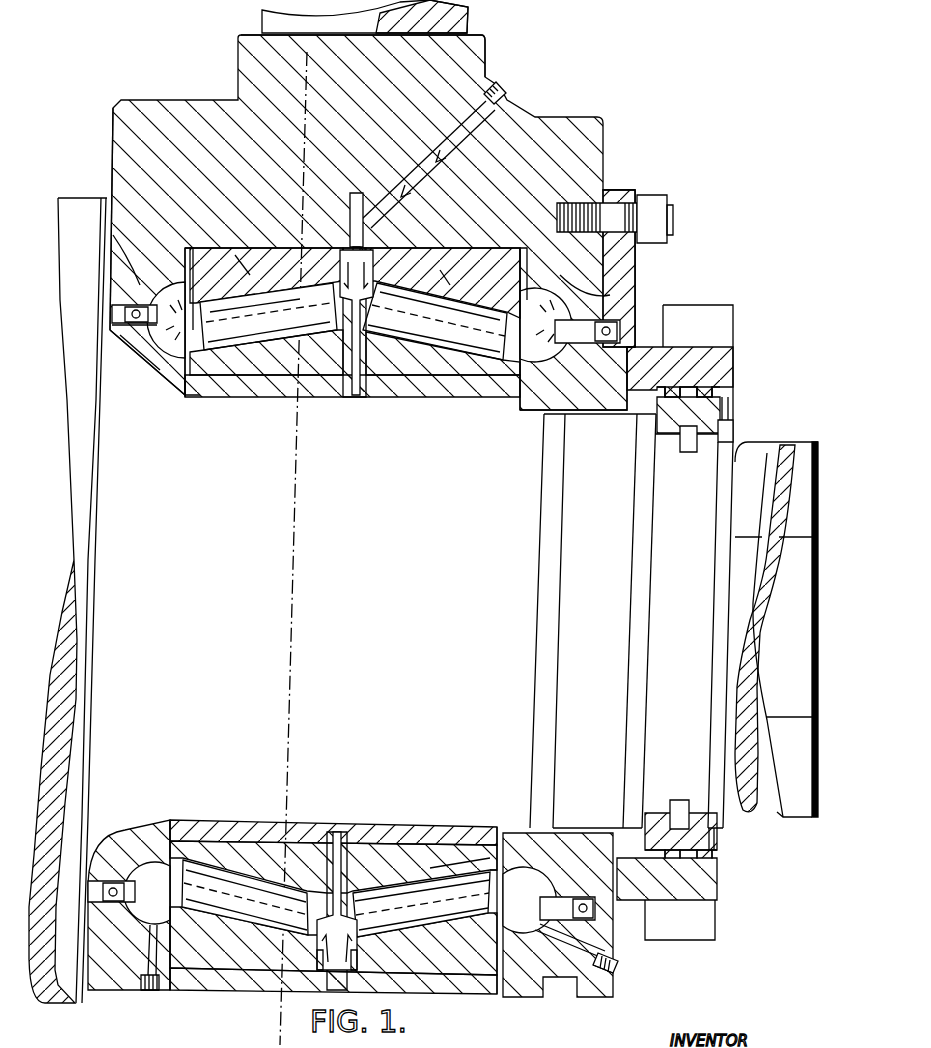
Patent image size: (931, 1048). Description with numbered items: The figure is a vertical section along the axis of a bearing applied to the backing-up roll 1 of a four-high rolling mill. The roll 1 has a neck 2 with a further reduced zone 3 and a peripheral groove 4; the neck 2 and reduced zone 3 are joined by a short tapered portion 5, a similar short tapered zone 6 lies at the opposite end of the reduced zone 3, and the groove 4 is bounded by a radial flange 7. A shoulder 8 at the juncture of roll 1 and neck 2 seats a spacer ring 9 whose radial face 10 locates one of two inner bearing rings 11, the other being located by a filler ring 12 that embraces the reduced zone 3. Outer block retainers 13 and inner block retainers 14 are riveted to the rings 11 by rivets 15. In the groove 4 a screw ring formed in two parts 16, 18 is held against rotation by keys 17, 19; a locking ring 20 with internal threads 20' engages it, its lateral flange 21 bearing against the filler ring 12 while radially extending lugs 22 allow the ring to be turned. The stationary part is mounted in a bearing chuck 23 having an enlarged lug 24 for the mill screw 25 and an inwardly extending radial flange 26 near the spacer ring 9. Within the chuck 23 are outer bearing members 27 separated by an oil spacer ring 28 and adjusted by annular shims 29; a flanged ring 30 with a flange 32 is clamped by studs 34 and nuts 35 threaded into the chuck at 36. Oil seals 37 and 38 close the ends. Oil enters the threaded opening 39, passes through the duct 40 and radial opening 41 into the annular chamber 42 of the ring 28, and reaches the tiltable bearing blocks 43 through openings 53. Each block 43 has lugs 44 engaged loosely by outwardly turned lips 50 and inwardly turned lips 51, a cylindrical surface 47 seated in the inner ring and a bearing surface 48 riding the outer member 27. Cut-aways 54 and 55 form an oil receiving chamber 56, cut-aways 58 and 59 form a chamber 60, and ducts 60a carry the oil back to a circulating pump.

The roll 1 is at (68, 600).
The neck 2 is at (312, 60).
The reduced zone 3 is at (611, 621).
The peripheral groove 4 is at (687, 509).
The short tapered portion 5 is at (550, 610).
The short tapered zone 6 is at (640, 617).
The radial flange 7 is at (717, 613).
The shoulder 8 is at (100, 527).
The spacer ring 9 is at (153, 367).
The radial face 10 is at (178, 392).
The inner bearing rings 11 is at (280, 392).
The filler ring 12 is at (537, 412).
The outer block retainers 13 is at (192, 392).
The inner block retainers 14 is at (352, 400).
The rivets 15 is at (320, 373).
The screw ring section 16 is at (734, 416).
The key 17 is at (698, 440).
The screw ring section 18 is at (700, 850).
The key 19 is at (690, 828).
The locking ring 20 is at (701, 646).
The internal threads 20' is at (720, 387).
The lateral flange 21 is at (668, 365).
The radially extending lugs 22 is at (726, 330).
The bearing chuck 23 is at (570, 150).
The enlarged lug 24 is at (455, 62).
The mill screw 25 is at (470, 22).
The inwardly extending radial flange 26 is at (138, 237).
The outer bearing members 27 is at (272, 270).
The oil spacer ring 28 is at (350, 242).
The annular shims 29 is at (182, 256).
The flanged ring 30 is at (625, 290).
The flange 32 is at (625, 198).
The studs 34 is at (673, 228).
The nuts 35 is at (660, 205).
The threaded end face 36 is at (606, 215).
The oil seal 37 is at (118, 312).
The oil seal 38 is at (620, 332).
The threaded opening 39 is at (506, 93).
The duct 40 is at (508, 103).
The radial opening 41 is at (358, 193).
The annular channel shaped chamber 42 is at (378, 226).
The tiltable bearing blocks 43 is at (344, 610).
The lugs 44 is at (470, 885).
The cylindrical surface 47 is at (390, 340).
The bearing surface 48 is at (446, 275).
The outwardly turned lips 50 is at (340, 960).
The inwardly turned lips 51 is at (455, 876).
The openings 53 is at (248, 272).
The cut-away 54 is at (125, 268).
The cut-away 55 is at (155, 350).
The oil receiving chamber 56 is at (150, 322).
The cut-away 58 is at (605, 282).
The cut-away 59 is at (580, 410).
The oil receiving chamber 60 is at (605, 320).
The ducts 60a is at (145, 992).